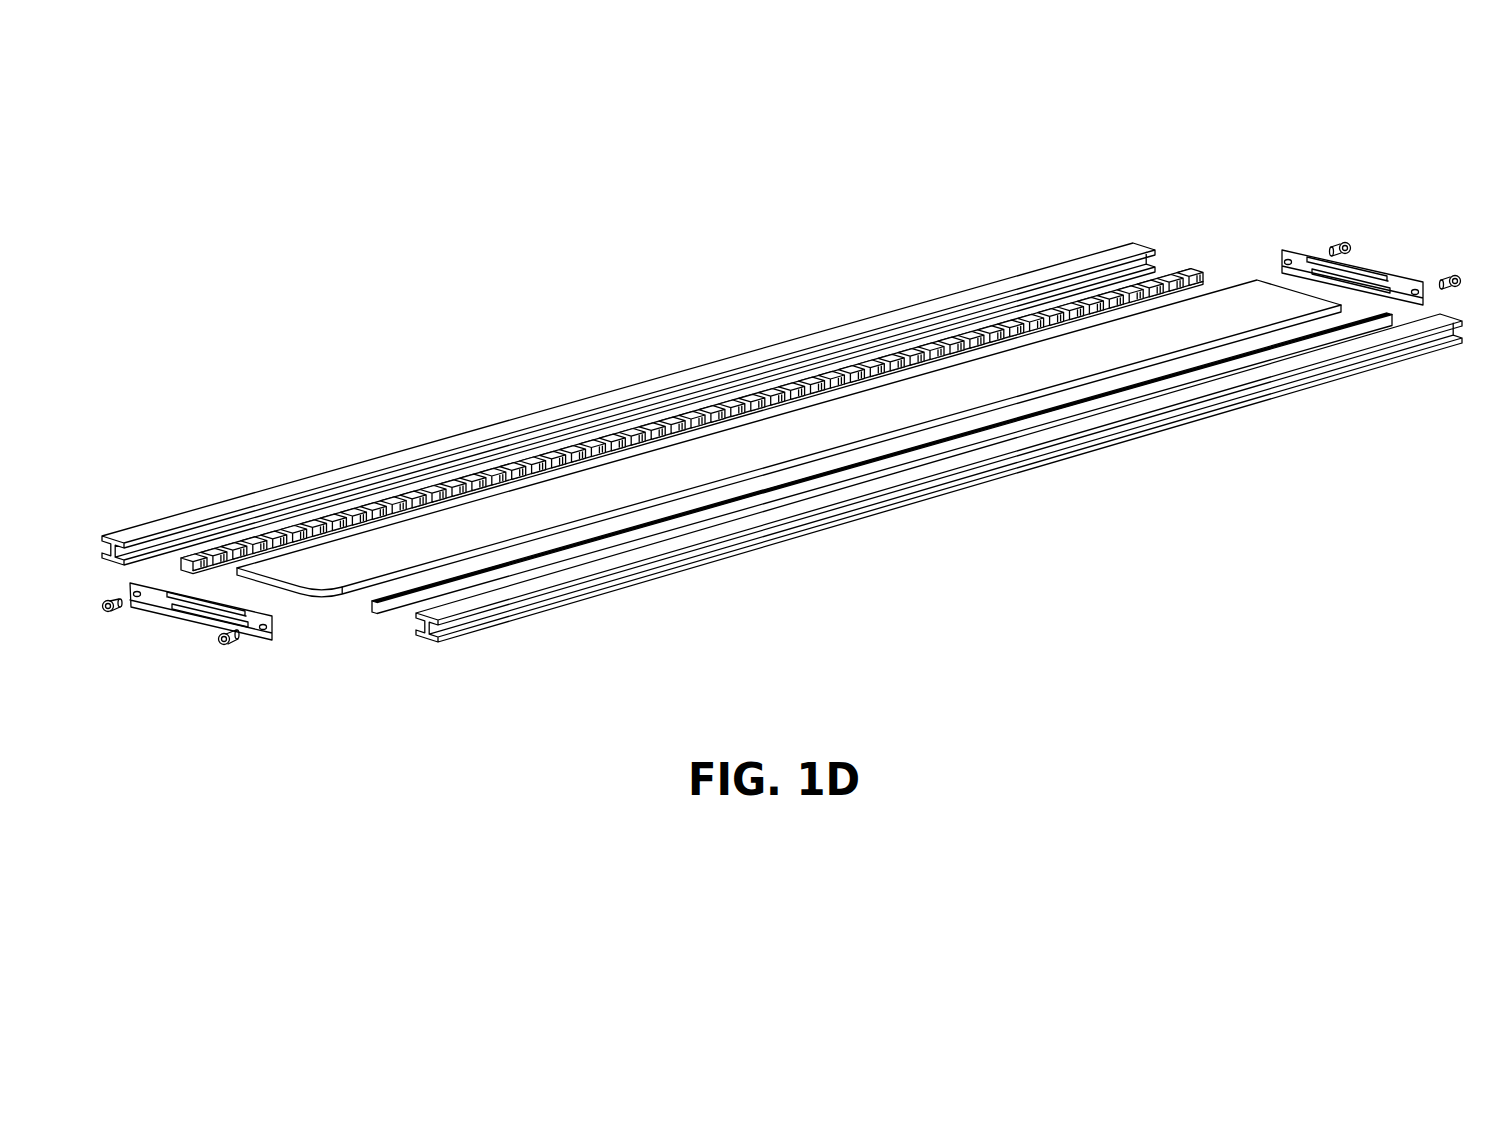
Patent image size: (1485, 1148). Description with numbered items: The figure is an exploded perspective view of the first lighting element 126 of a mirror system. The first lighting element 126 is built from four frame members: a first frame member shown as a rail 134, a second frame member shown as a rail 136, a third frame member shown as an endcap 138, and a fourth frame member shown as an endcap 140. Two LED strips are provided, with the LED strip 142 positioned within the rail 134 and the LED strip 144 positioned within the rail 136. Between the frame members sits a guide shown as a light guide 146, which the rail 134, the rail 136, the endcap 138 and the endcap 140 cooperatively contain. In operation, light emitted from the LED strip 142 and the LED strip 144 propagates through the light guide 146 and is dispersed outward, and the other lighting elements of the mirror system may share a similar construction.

The first lighting element 126 is at (305, 280).
The rail 134 is at (145, 527).
The rail 136 is at (789, 528).
The endcap 138 is at (1398, 272).
The endcap 140 is at (250, 625).
The LED strip 142 is at (1198, 268).
The LED strip 144 is at (382, 607).
The light guide 146 is at (942, 372).